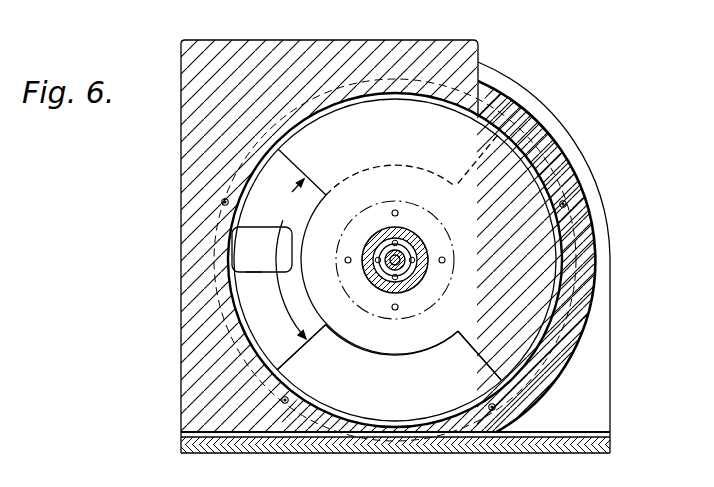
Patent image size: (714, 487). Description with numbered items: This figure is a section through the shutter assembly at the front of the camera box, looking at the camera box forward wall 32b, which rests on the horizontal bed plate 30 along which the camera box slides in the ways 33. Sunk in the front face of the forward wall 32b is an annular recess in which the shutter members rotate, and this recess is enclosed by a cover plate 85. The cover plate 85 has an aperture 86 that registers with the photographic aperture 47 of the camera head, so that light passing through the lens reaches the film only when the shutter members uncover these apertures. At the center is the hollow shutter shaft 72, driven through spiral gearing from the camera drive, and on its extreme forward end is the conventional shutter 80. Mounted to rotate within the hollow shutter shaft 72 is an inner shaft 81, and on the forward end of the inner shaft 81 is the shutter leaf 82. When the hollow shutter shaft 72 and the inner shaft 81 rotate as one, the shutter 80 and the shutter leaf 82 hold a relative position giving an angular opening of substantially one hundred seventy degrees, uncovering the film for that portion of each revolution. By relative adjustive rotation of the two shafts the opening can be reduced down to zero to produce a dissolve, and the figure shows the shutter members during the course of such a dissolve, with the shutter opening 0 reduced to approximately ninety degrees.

The camera box forward wall 32b is at (197, 122).
The shutter 80 is at (465, 129).
The cover plate 85 is at (255, 208).
The shutter leaf 82 is at (389, 355).
The shutter opening 0 is at (291, 197).
The photographic aperture 47 is at (253, 228).
The aperture 86 is at (252, 263).
The inner shaft 81 is at (402, 256).
The hollow shutter shaft 72 is at (405, 268).
The ways 33 is at (338, 440).
The bed plate 30 is at (255, 453).